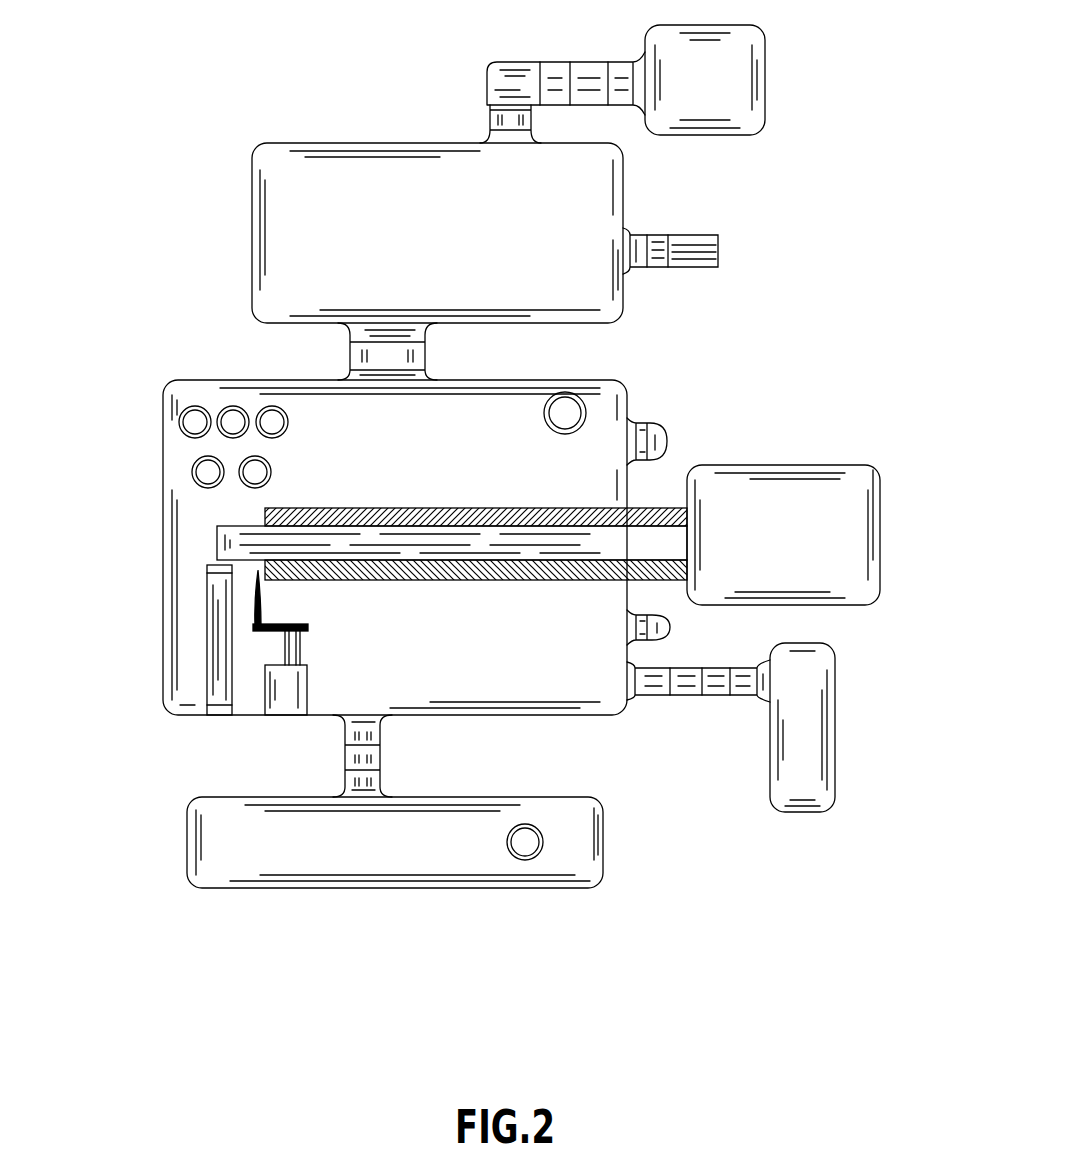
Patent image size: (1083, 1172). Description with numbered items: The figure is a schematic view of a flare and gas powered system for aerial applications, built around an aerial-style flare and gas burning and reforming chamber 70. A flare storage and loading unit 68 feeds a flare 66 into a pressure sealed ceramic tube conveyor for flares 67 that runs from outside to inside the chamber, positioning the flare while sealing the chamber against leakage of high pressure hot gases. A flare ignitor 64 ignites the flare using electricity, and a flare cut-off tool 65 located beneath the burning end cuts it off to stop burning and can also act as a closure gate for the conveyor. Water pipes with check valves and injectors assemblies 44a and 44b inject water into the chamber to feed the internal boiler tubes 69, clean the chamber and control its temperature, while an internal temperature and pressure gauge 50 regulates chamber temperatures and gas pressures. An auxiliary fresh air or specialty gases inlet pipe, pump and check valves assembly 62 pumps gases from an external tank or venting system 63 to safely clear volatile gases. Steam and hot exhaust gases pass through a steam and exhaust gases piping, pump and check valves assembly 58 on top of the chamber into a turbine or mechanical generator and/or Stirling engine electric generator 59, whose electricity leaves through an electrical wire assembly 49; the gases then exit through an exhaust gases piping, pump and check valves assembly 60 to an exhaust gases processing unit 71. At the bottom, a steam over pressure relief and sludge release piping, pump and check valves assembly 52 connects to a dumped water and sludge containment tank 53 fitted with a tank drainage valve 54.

The water pipes with check valves and injectors assembly 44a is at (657, 419).
The water pipes with check valves and injectors assembly 44b is at (677, 627).
The electrical wire assembly 49 is at (727, 251).
The internal temperature and pressure gauge 50 is at (586, 398).
The steam over pressure relief and sludge release piping, pump and check valves asse 52 is at (394, 741).
The dumped water and sludge containment tank 53 is at (185, 830).
The tank drainage valve 54 is at (549, 838).
The steam and exhaust gases piping, pump and check valves assembly 58 is at (440, 349).
The turbine or mechanical generator and/or Stirling engine electric generator 59 is at (247, 207).
The exhaust gases piping, pump and check valves assembly 60 is at (478, 90).
The auxiliary fresh air or specialty gases inlet pipe, pump and check valves assembl 62 is at (724, 700).
The external tank or venting system 63 is at (803, 818).
The flare ignitor 64 is at (202, 587).
The flare cut-off tool 65 is at (261, 640).
The flare 66 is at (213, 537).
The pressure sealed ceramic tube conveyor for flares 67 is at (507, 586).
The flare storage and loading unit 68 is at (752, 454).
The internal boiler tubes 69 is at (228, 452).
The aerial-style flare and gas burning and reforming chamber 70 is at (223, 376).
The exhaust gases processing unit 71 is at (738, 147).